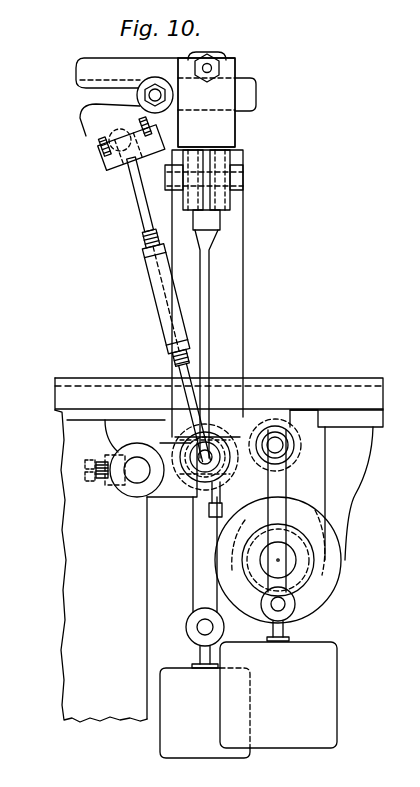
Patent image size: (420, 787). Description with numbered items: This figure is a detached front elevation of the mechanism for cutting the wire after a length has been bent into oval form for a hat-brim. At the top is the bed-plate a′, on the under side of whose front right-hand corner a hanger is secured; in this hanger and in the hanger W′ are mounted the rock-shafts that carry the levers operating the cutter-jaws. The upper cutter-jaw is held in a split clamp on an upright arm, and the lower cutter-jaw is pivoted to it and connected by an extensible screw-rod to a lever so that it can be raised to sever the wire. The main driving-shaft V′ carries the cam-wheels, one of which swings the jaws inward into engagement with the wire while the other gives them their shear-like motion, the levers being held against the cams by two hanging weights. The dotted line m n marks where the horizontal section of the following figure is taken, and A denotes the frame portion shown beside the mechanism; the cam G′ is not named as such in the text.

The bed-plate a′ is at (219, 402).
The frame A is at (101, 566).
The dotted line m n m is at (108, 472).
The dotted line m n is at (238, 455).
The hanger W′ is at (349, 493).
The pulley G′ is at (332, 486).
The main driving-shaft V′ is at (292, 562).